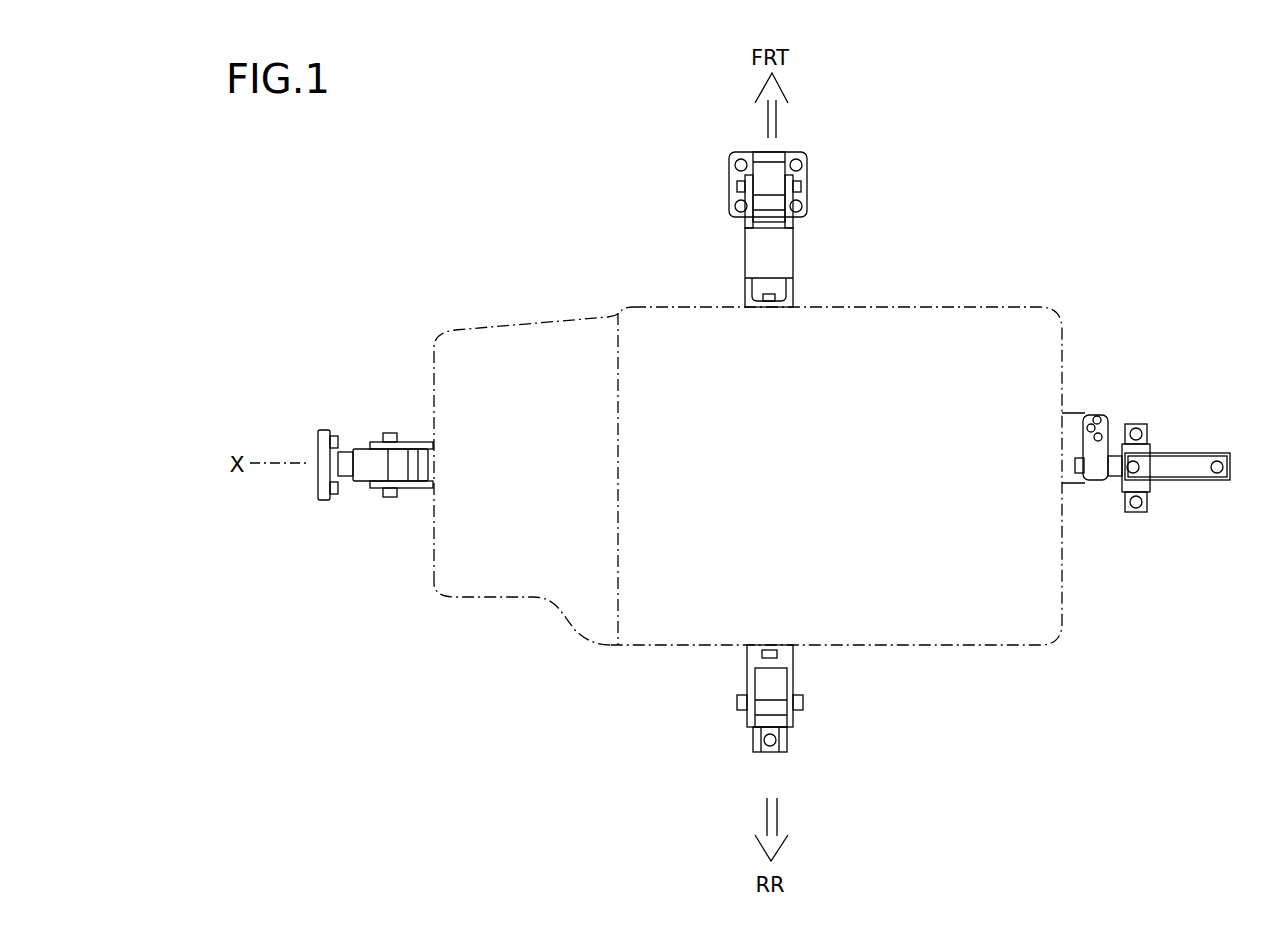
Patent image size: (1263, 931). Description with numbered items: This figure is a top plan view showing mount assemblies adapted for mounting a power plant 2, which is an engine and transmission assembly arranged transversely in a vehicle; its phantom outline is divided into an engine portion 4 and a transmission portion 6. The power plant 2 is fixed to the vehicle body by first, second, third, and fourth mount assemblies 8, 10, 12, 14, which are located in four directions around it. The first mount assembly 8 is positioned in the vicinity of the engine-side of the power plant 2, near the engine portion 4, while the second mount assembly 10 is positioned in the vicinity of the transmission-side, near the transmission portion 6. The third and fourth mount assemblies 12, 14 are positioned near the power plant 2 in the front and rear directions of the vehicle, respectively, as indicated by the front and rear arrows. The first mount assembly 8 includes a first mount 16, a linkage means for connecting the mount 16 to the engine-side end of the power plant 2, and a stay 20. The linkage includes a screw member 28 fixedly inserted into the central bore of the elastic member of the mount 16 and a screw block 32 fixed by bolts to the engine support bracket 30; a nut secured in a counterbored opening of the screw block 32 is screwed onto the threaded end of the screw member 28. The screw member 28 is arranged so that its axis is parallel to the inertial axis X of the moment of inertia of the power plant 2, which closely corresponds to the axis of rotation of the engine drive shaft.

The power plant 2 is at (748, 383).
The engine 4 is at (963, 307).
The transmission 6 is at (520, 325).
The first mount assembly 8 is at (1146, 432).
The second mount assembly 10 is at (380, 410).
The third mount assembly 12 is at (702, 168).
The fourth mount assembly 14 is at (711, 753).
The first mount 16 is at (1147, 487).
The stay 20 is at (1175, 460).
The screw member 28 is at (1115, 456).
The engine support bracket 30 is at (1078, 420).
The screw block 32 is at (1098, 470).